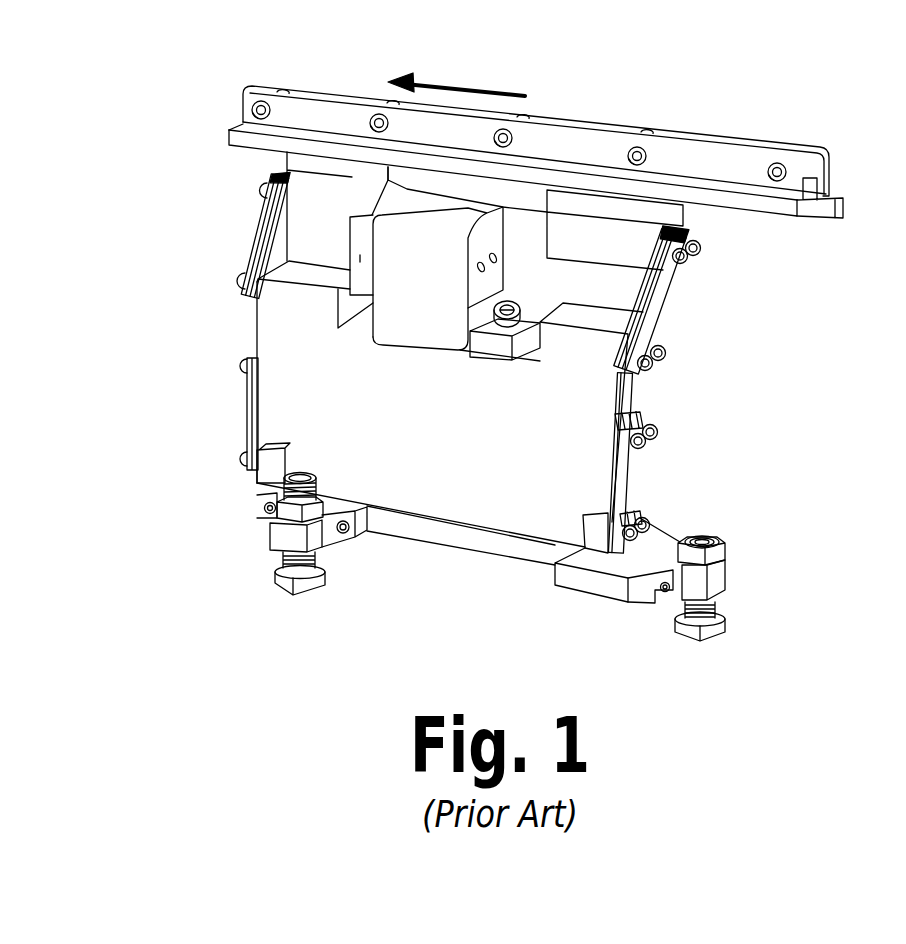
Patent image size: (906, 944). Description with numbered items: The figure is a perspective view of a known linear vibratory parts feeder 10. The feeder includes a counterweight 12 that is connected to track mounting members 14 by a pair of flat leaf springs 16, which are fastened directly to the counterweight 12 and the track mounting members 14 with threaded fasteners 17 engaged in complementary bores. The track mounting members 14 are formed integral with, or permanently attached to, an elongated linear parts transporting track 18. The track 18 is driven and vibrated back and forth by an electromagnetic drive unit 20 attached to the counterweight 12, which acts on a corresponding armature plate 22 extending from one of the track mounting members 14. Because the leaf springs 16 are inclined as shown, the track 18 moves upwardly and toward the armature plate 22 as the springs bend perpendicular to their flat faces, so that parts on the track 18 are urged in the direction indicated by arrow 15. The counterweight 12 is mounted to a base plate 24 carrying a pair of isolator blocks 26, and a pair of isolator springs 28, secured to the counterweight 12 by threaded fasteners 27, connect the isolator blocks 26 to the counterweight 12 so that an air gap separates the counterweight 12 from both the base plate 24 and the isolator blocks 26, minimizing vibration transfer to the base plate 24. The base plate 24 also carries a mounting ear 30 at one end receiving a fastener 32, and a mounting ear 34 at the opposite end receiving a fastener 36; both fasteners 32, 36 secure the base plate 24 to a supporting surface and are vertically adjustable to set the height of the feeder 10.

The linear vibratory parts feeder 10 is at (95, 116).
The counterweight 12 is at (448, 438).
The track mounting members 14 is at (331, 208).
The arrow 15 is at (453, 82).
The flat leaf springs 16 is at (262, 237).
The threaded fasteners 17 is at (262, 184).
The linear parts transporting track 18 is at (614, 122).
The electromagnetic drive unit 20 is at (432, 288).
The armature plate 22 is at (374, 250).
The base plate 24 is at (463, 556).
The isolator blocks 26 is at (274, 465).
The threaded fasteners 27 is at (243, 366).
The isolator springs 28 is at (247, 410).
The mounting ear 30 is at (268, 541).
The fastener 32 is at (326, 559).
The mounting ear 34 is at (727, 556).
The fastener 36 is at (728, 611).